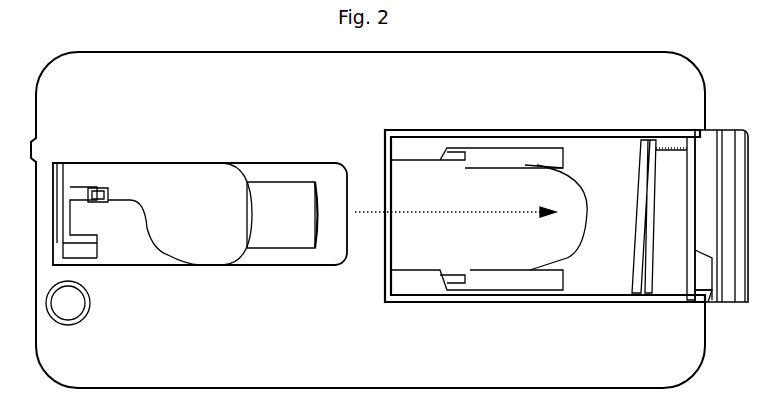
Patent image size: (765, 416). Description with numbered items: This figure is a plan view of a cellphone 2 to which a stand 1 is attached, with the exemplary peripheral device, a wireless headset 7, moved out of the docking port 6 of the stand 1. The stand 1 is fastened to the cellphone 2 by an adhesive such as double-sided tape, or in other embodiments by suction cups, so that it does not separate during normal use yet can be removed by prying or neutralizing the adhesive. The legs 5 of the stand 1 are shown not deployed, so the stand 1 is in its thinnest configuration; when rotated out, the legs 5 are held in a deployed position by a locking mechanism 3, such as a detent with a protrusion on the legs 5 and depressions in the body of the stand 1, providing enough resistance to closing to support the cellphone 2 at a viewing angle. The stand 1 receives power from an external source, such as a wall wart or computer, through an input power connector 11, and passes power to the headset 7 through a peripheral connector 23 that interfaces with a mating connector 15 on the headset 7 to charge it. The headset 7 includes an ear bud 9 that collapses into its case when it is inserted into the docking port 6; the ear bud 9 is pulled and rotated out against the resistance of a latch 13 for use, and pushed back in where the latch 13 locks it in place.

The stand 1 is at (728, 122).
The cellphone 2 is at (362, 358).
The locking mechanism 3 is at (667, 162).
The legs 5 is at (533, 135).
The docking port 6 is at (366, 195).
The wireless headset 7 is at (165, 158).
The ear bud 9 is at (115, 243).
The input power connector 11 is at (707, 290).
The latch 13 is at (98, 188).
The mating connector 15 is at (374, 215).
The peripheral connector 23 is at (692, 213).